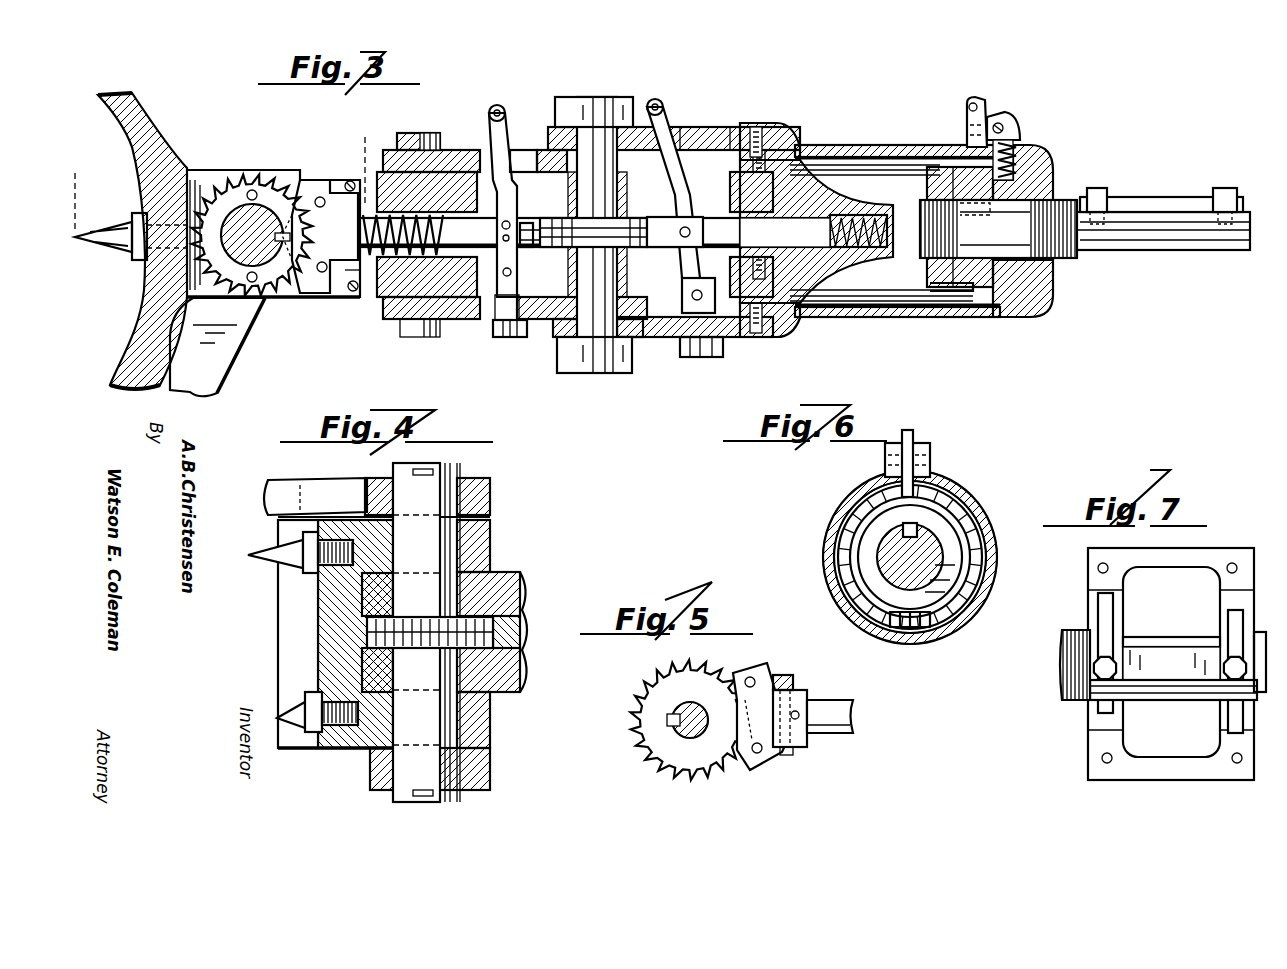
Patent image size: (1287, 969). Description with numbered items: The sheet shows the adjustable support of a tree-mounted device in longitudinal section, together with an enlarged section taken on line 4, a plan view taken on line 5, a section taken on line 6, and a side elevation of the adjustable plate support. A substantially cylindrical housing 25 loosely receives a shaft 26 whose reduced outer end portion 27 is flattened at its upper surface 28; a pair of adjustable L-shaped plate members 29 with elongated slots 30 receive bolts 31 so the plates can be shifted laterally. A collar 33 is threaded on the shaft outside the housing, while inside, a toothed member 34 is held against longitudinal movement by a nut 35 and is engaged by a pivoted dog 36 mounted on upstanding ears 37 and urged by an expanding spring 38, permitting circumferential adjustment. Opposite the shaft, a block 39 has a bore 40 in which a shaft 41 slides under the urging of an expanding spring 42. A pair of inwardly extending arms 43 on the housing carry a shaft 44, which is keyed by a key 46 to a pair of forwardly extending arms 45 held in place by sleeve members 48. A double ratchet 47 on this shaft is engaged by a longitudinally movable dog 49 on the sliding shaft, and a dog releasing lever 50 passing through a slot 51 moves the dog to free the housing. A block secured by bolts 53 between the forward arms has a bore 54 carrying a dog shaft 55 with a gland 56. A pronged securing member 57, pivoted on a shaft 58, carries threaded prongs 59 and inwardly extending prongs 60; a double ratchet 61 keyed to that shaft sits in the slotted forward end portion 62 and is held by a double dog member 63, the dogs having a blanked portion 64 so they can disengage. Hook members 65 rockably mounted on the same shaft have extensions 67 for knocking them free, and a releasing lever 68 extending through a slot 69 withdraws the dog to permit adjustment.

In FIG. 3, the section line 4— 4 is at (358, 167).
In FIG. 3, the section line 5— 5 is at (545, 215).
In FIG. 3, the section line 6— 6 is at (952, 143).
In FIG. 3, the housing 25 is at (866, 145).
In FIG. 6, the housing 25 is at (942, 640).
In FIG. 3, the shaft 26 is at (1040, 285).
In FIG. 6, the shaft 26 is at (890, 555).
In FIG. 7, the shaft 26 is at (1062, 690).
In FIG. 3, the reduced outer end portion 27 is at (1180, 235).
In FIG. 7, the reduced outer end portion 27 is at (1172, 630).
In FIG. 3, the flattened upper surface 28 is at (1240, 188).
In FIG. 7, the flattened upper surface 28 is at (1177, 680).
In FIG. 3, the adjustable L-shaped plate members 29 is at (1168, 197).
In FIG. 7, the adjustable L-shaped plate members 29 is at (1088, 578).
In FIG. 7, the elongated slot 30 is at (1106, 620).
In FIG. 3, the bolts 31 is at (1098, 188).
In FIG. 7, the bolts 31 is at (1228, 662).
In FIG. 3, the collar 33 is at (1050, 170).
In FIG. 3, the toothed member 34 is at (948, 300).
In FIG. 6, the toothed member 34 is at (950, 512).
In FIG. 3, the nut 35 is at (938, 167).
In FIG. 3, the pivoted dog 36 is at (978, 118).
In FIG. 6, the pivoted dog 36 is at (915, 440).
In FIG. 3, the upstanding ears 37 is at (1018, 125).
In FIG. 3, the expanding spring 38 is at (1022, 140).
In FIG. 3, the block 39 is at (808, 165).
In FIG. 3, the bore 40 is at (780, 123).
In FIG. 3, the shaft 41 is at (716, 127).
In FIG. 5, the shaft 41 is at (842, 725).
In FIG. 3, the expanding spring 42 is at (855, 255).
In FIG. 3, the inwardly extending arms 43 is at (640, 127).
In FIG. 3, the shaft 44 is at (592, 340).
In FIG. 5, the shaft 44 is at (692, 738).
In FIG. 3, the forwardly extending arms 45 is at (458, 150).
In FIG. 3, the key 46 is at (590, 125).
In FIG. 3, the double ratchet 47 is at (596, 175).
In FIG. 5, the double ratchet 47 is at (660, 695).
In FIG. 3, the sleeve members 48 is at (680, 290).
In FIG. 3, the longitudinally movable dog 49 is at (670, 247).
In FIG. 5, the longitudinally movable dog 49 is at (785, 755).
In FIG. 3, the dog releasing lever 50 is at (668, 110).
In FIG. 3, the slot or opening 51 is at (690, 127).
In FIG. 3, the bolts 53 is at (436, 132).
In FIG. 3, the bore 54 is at (412, 126).
In FIG. 3, the dog shaft 55 is at (533, 248).
In FIG. 3, the gland 56 is at (495, 330).
In FIG. 3, the pronged securing member 57 is at (178, 131).
In FIG. 4, the pronged securing member 57 is at (310, 622).
In FIG. 3, the shaft 58 is at (245, 215).
In FIG. 4, the shaft 58 is at (433, 540).
In FIG. 3, the prongs or points 59 is at (113, 250).
In FIG. 4, the prongs or points 59 is at (262, 552).
In FIG. 3, the inwardly extending prongs 60 is at (110, 92).
In FIG. 3, the double ratchet 61 is at (278, 300).
In FIG. 4, the double ratchet 61 is at (422, 630).
In FIG. 4, the slotted forward end portion 62 is at (362, 655).
In FIG. 3, the double dog member 63 is at (318, 300).
In FIG. 4, the double dog member 63 is at (530, 640).
In FIG. 3, the blanked portion 64 is at (310, 190).
In FIG. 5, the blanked portion 64 is at (752, 672).
In FIG. 3, the hook members 65 is at (222, 374).
In FIG. 4, the hook members 65 is at (336, 482).
In FIG. 4, the extensions 67 is at (418, 472).
In FIG. 3, the releasing lever 68 is at (506, 108).
In FIG. 3, the slot 69 is at (527, 150).